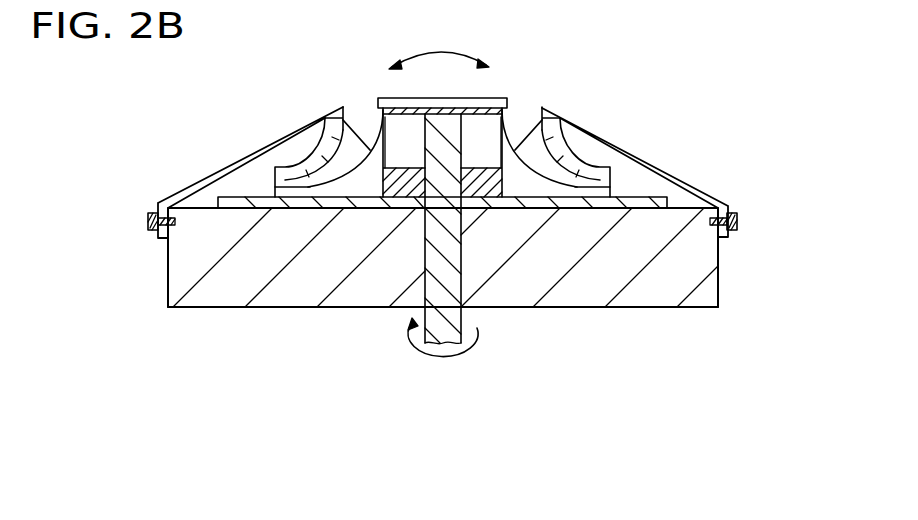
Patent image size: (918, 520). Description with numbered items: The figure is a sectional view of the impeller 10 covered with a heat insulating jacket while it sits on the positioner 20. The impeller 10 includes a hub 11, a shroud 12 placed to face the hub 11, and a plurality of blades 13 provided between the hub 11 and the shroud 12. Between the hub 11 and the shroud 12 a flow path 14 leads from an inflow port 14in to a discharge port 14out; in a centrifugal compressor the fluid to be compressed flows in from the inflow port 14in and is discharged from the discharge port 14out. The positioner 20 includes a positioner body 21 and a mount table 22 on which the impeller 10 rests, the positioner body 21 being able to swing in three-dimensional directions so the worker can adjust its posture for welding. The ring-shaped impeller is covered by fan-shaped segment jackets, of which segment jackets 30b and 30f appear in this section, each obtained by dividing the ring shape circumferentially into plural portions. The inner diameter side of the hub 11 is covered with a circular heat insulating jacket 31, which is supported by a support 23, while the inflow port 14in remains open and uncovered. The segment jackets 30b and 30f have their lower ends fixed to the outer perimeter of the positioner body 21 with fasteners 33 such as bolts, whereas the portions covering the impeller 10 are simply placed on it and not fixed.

The impeller 10 is at (507, 114).
The hub 11 is at (578, 150).
The shroud 12 is at (588, 158).
The blades 13 is at (517, 147).
The flow path 14 is at (330, 172).
The inflow port 14in is at (347, 125).
The discharge port 14out is at (616, 176).
The positioner 20 is at (718, 262).
The positioner body 21 is at (719, 284).
The mount table 22 is at (667, 202).
The support 23 is at (425, 142).
The segment jacket 30b is at (245, 157).
The segment jacket 30f is at (633, 152).
The heat insulating jacket 31 is at (437, 97).
The fasteners 33 is at (147, 222).